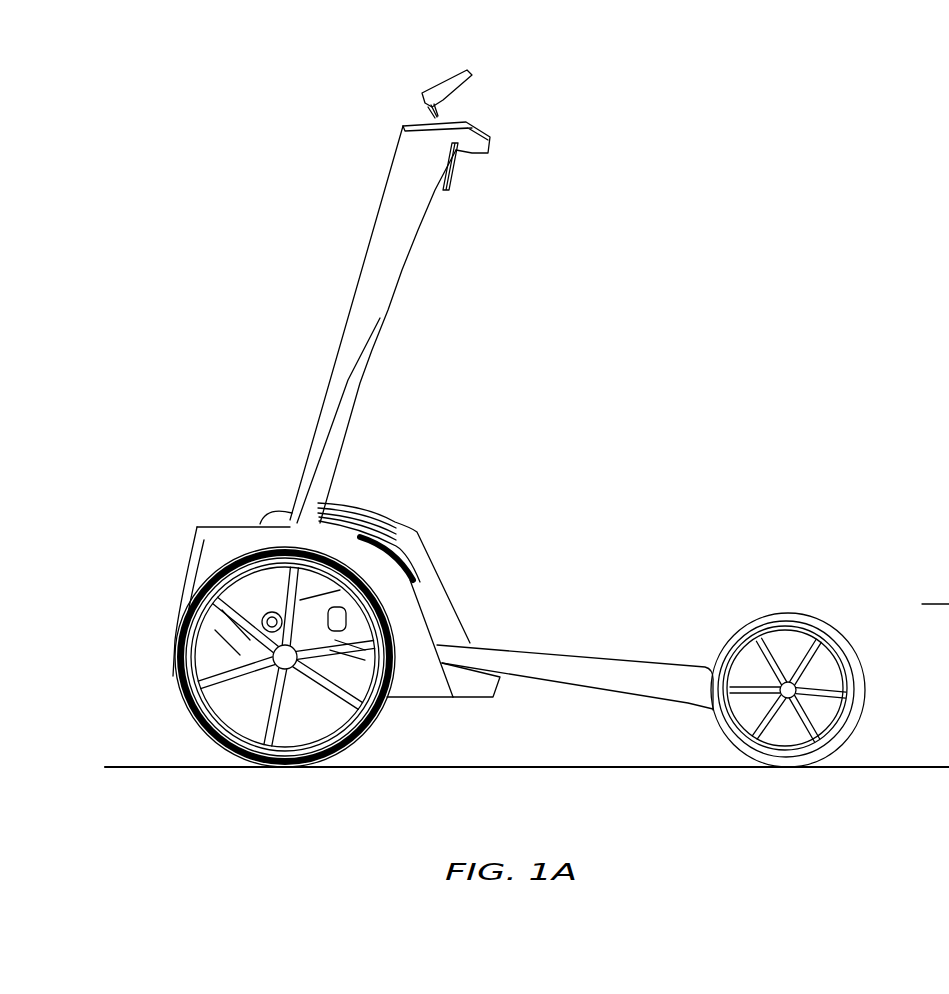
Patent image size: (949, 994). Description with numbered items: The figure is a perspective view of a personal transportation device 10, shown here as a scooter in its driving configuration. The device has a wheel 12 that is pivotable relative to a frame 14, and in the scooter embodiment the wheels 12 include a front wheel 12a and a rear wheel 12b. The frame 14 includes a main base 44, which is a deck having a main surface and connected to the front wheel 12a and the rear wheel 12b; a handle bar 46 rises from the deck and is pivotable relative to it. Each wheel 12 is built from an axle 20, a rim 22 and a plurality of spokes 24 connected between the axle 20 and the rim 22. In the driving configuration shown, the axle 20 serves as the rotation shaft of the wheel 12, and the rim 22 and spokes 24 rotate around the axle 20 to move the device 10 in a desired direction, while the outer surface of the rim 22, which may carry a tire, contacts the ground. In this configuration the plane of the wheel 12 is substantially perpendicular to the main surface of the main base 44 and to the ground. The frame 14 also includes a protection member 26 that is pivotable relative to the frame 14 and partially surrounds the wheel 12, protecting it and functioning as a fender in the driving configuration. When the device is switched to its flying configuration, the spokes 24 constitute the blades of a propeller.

The personal transportation device 10 is at (517, 421).
The wheel 12 is at (243, 560).
The front wheel 12a is at (207, 733).
The rear wheel 12b is at (862, 700).
The frame 14 is at (573, 645).
The axle 20 is at (293, 685).
The rim 22 is at (840, 723).
The spokes 24 is at (367, 700).
The protection member 26 is at (362, 552).
The main base 44 is at (643, 677).
The handle bar 46 is at (403, 218).